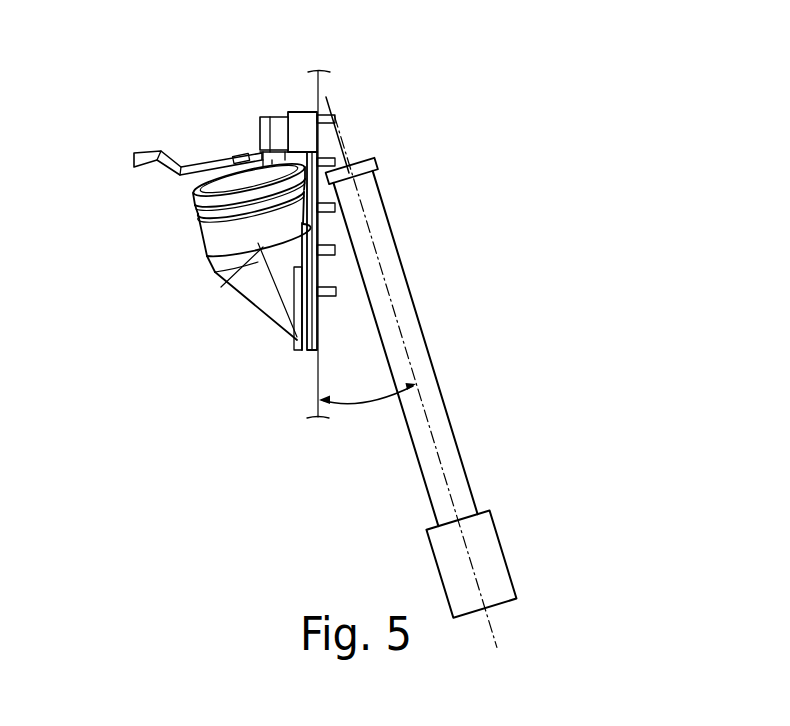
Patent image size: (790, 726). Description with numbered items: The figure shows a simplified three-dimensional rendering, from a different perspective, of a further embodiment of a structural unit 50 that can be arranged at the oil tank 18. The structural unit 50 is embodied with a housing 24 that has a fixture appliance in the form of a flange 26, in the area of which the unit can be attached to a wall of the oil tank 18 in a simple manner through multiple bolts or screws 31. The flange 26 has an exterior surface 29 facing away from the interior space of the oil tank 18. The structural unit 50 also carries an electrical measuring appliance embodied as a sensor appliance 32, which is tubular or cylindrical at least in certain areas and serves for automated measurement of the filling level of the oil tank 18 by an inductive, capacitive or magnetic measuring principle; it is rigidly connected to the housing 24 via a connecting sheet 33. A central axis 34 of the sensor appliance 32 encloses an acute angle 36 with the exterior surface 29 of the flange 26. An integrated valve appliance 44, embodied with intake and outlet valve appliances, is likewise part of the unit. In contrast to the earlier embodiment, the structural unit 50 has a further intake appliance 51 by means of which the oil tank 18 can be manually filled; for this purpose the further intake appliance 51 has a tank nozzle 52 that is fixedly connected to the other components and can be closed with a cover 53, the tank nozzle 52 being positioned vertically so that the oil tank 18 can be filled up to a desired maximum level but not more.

The oil tank 18 is at (317, 90).
The housing 24 is at (313, 285).
The flange 26 is at (320, 111).
The exterior surface 29 is at (288, 130).
The bolts or screws 31 is at (330, 294).
The sensor appliance 32 is at (447, 380).
The connecting sheet 33 is at (342, 223).
The central axis 34 is at (460, 512).
The acute angle 36 is at (356, 403).
The integrated valve appliance 44 is at (277, 143).
The structural unit 50 is at (164, 70).
The further intake appliance 51 is at (206, 263).
The tank nozzle 52 is at (210, 232).
The cover 53 is at (197, 180).